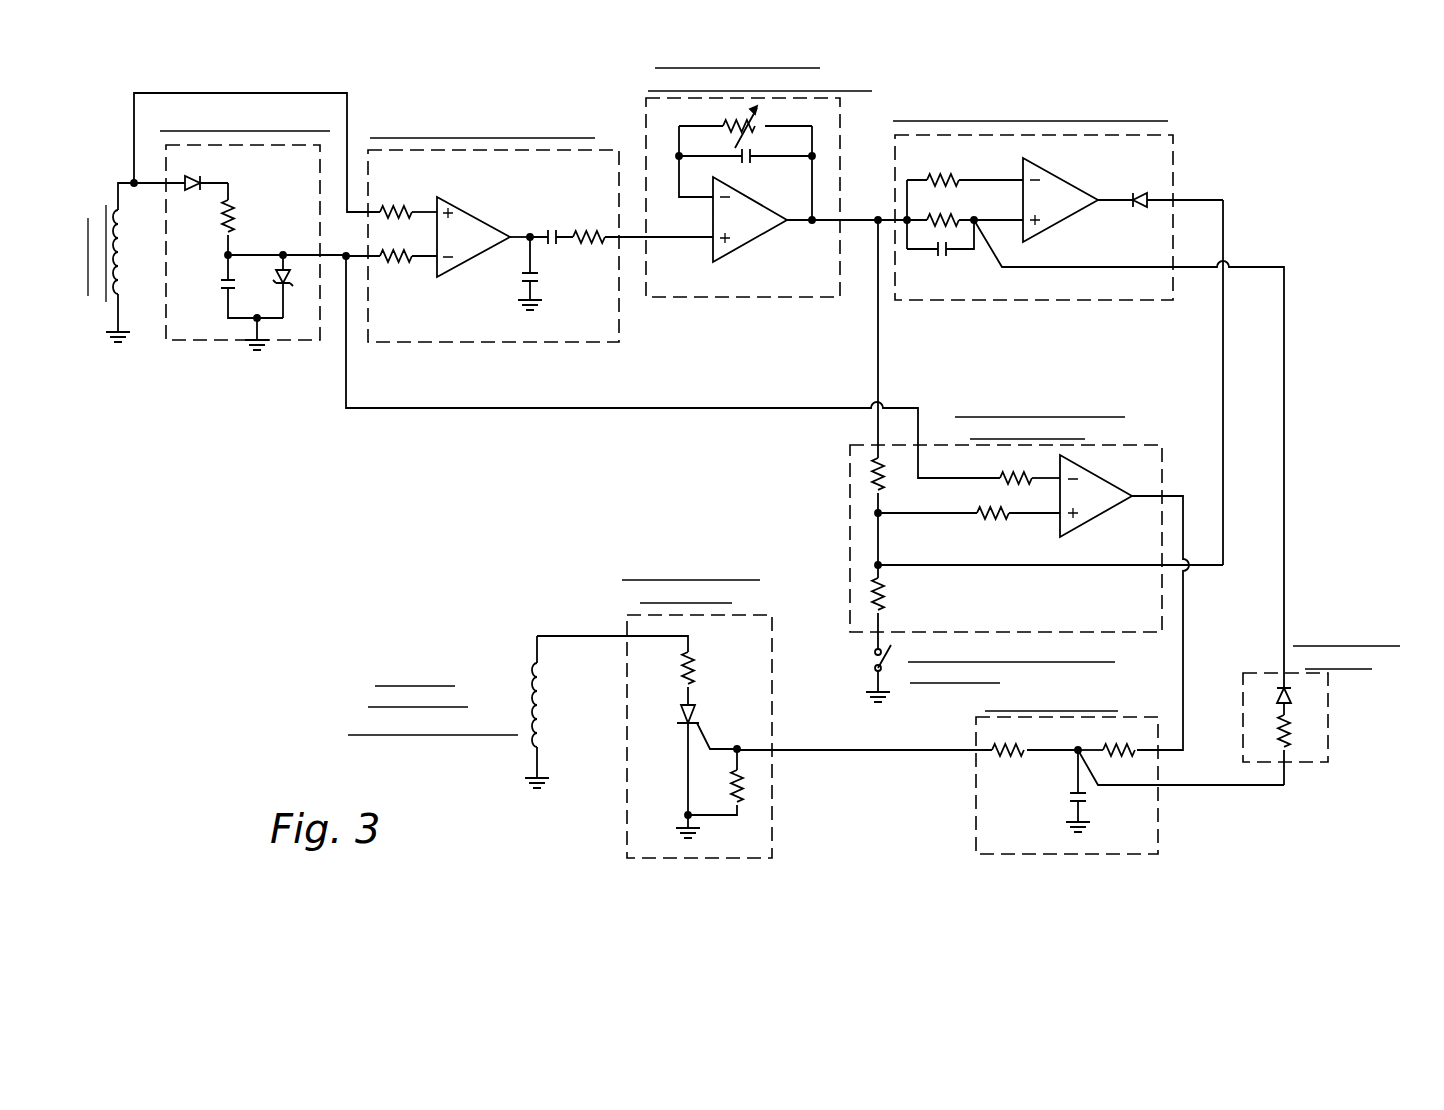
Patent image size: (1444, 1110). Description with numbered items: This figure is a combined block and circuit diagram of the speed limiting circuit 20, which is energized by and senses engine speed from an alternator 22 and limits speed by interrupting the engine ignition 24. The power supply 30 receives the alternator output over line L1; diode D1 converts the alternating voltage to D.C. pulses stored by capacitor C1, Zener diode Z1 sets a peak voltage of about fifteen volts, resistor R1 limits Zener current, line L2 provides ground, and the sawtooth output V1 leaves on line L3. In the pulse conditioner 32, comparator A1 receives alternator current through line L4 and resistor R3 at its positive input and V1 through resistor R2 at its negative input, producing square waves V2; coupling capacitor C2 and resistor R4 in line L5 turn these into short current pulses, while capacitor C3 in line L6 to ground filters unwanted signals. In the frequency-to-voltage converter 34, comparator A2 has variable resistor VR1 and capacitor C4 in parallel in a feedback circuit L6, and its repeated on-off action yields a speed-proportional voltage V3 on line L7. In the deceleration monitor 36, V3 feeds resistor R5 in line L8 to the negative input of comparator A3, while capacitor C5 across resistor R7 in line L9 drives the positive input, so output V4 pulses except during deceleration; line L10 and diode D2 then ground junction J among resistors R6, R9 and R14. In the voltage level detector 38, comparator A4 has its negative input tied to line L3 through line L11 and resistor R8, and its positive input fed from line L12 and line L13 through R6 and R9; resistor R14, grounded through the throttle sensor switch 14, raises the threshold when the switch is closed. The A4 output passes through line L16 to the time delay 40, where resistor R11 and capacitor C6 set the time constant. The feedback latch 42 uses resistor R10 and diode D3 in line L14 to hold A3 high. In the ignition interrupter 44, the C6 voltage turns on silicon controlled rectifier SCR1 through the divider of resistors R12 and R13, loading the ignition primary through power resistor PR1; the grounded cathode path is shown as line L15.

The circuit 20 is at (312, 440).
The alternator 22 is at (117, 182).
The engine ignition 24 is at (527, 743).
The power supply 30 is at (222, 345).
The pulse conditioner 32 is at (505, 345).
The frequency-to-voltage converter 34 is at (728, 297).
The deceleration monitor 36 is at (1175, 170).
The voltage level detector 38 is at (848, 462).
The time delay 40 is at (975, 801).
The feedback latch 42 is at (1330, 730).
The ignition interrupter 44 is at (775, 663).
The throttle sensor switch 14 is at (872, 659).
The junction J is at (880, 563).
The electrical circuit line L1 is at (154, 187).
The line L2 is at (262, 352).
The line L3 is at (300, 253).
The line L4 is at (288, 93).
The line L5 is at (630, 238).
The line L6 is at (528, 259).
The line L7 is at (795, 222).
The line L8 is at (985, 176).
The line L9 is at (977, 218).
The line L10 is at (1205, 200).
The line L11 is at (690, 405).
The line L12 is at (879, 368).
The line L13 is at (905, 512).
The line L14 is at (1285, 352).
The line L15 is at (687, 790).
The line L16 is at (1183, 621).
The output voltage V1 is at (337, 247).
The output voltage V2 is at (519, 224).
The voltage V3 is at (862, 210).
The voltage V4 is at (1113, 214).
The resistor R1 is at (241, 219).
The resistor R2 is at (391, 246).
The resistor R3 is at (408, 202).
The resistor R4 is at (643, 224).
The resistor R5 is at (965, 170).
The resistor R6 is at (890, 485).
The resistor R7 is at (965, 211).
The resistor R8 is at (1030, 468).
The resistor R9 is at (1018, 524).
The resistor R10 is at (1300, 750).
The resistor R11 is at (1106, 740).
The resistor R12 is at (907, 740).
The resistor R13 is at (715, 782).
The resistor R14 is at (897, 613).
The capacitor C1 is at (236, 286).
The coupling capacitor C2 is at (551, 224).
The capacitor C3 is at (540, 273).
The capacitor C4 is at (745, 173).
The capacitor C5 is at (942, 249).
The capacitor C6 is at (1175, 789).
The diode D1 is at (203, 170).
The diode D2 is at (1174, 190).
The diode D3 is at (1298, 701).
The Zener diode Z1 is at (296, 285).
The comparator A1 is at (473, 237).
The comparator A2 is at (750, 219).
The comparator A3 is at (1060, 200).
The comparator A4 is at (1096, 496).
The variable resistor VR1 is at (745, 124).
The power resistor PR1 is at (635, 670).
The silicon controlled rectifier SCR1 is at (713, 720).